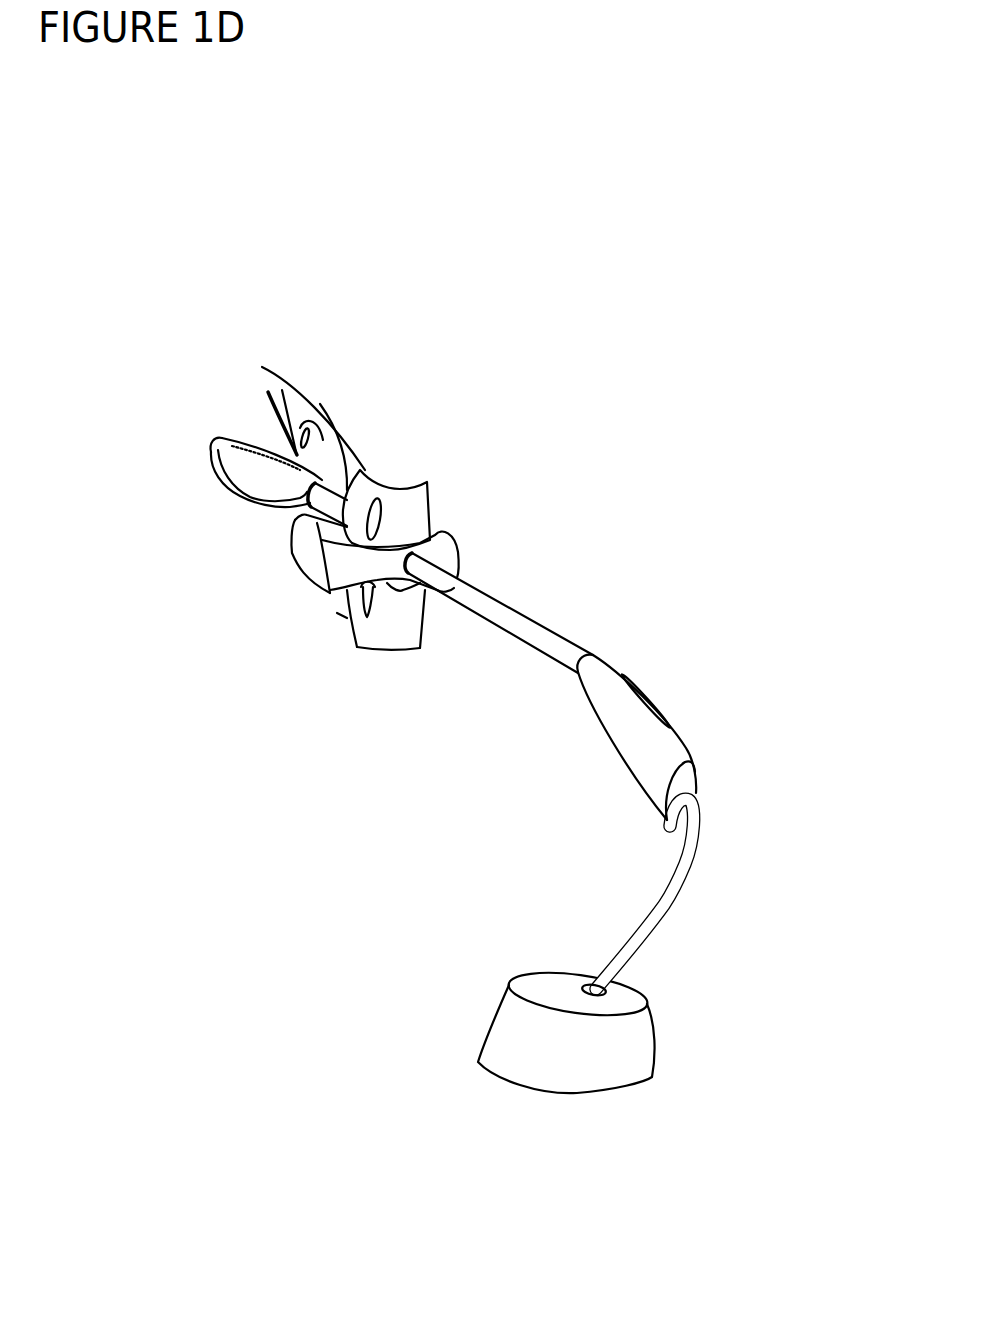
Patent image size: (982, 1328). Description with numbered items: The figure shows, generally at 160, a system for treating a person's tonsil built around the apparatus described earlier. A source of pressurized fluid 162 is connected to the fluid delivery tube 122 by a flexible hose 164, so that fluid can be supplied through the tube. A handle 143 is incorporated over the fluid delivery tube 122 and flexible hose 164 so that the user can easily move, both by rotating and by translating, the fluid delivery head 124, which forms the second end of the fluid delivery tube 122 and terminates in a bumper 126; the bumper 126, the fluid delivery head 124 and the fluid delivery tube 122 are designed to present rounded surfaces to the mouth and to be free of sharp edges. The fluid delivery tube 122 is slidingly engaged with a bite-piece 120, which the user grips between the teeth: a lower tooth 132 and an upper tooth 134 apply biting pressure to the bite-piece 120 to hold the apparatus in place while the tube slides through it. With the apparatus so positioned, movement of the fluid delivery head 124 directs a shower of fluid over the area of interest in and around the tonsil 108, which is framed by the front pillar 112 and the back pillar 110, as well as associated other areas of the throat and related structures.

The system 160 is at (437, 695).
The source of pressurized fluid 162 is at (290, 1220).
The flexible hose 164 is at (700, 928).
The handle 143 is at (783, 699).
The fluid delivery tube 122 is at (663, 570).
The upper tooth 134 is at (550, 447).
The front pillar 112 is at (353, 448).
The back pillar 110 is at (268, 392).
The tonsil 108 is at (325, 441).
The fluid delivery head 124 is at (148, 577).
The bumper 126 is at (217, 447).
The bite-piece 120 is at (240, 708).
The lower tooth 132 is at (438, 782).